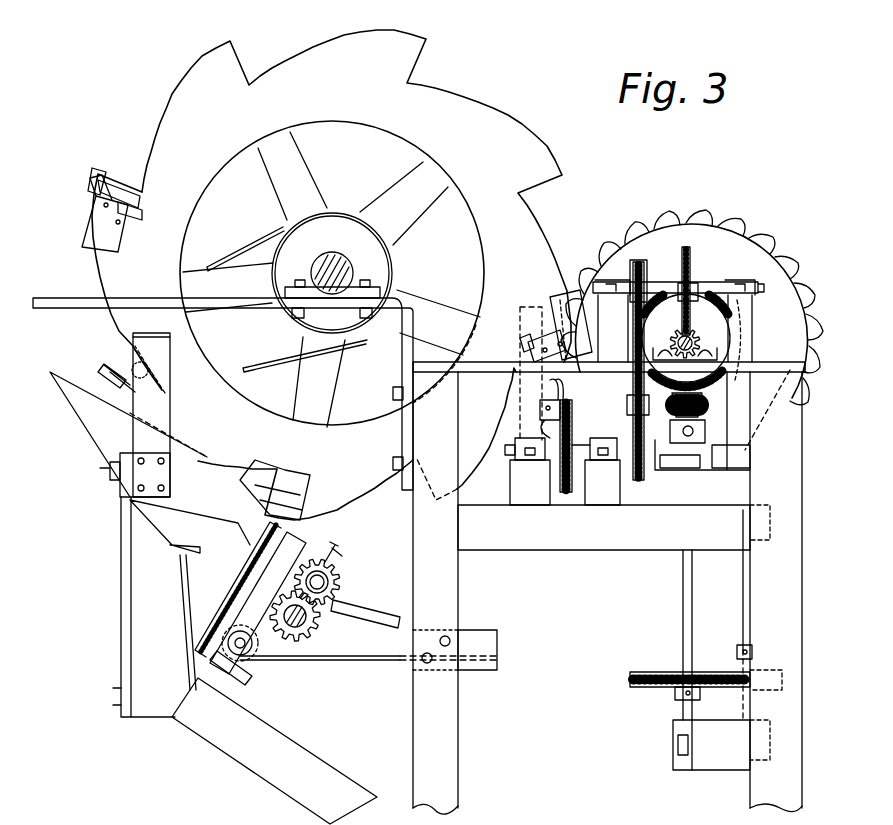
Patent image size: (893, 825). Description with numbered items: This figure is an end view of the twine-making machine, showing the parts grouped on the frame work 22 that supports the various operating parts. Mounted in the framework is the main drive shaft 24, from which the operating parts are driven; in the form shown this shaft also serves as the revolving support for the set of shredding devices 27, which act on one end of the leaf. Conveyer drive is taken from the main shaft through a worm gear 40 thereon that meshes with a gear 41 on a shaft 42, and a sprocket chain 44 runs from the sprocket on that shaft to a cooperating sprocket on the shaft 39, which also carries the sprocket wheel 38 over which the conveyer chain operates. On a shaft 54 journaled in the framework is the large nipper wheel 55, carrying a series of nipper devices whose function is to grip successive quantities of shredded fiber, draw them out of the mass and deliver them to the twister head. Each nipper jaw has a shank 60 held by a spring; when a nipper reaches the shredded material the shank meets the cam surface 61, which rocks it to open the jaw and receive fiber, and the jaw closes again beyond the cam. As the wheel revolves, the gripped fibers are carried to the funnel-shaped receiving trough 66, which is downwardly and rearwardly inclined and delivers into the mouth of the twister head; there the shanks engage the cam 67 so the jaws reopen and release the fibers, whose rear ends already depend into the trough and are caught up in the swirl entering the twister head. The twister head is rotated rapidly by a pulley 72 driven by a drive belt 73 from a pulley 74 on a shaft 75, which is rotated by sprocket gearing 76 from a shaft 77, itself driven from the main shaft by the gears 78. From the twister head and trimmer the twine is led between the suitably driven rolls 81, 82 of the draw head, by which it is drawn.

The frame work 22 is at (515, 540).
The main drive shaft 24 is at (705, 330).
The shredding devices 27 is at (692, 300).
The sprocket wheel 38 is at (578, 490).
The shaft 39 is at (516, 442).
The worm gear 40 is at (675, 338).
The gear 41 is at (702, 250).
The shaft 42 is at (640, 280).
The sprocket chain 44 is at (627, 273).
The shaft 54 is at (356, 276).
The nipper wheel 55 is at (510, 132).
The shank 60 is at (118, 195).
The cam surface 61 is at (522, 336).
The receiving trough 66 is at (105, 440).
The cam 67 is at (165, 405).
The pulley 72 is at (295, 540).
The drive belt 73 is at (362, 655).
The pulley 74 is at (716, 660).
The shaft 75 is at (742, 590).
The sprocket gearing 76 is at (720, 690).
The shaft 77 is at (682, 597).
The gears 78 is at (700, 398).
The roll 81 is at (340, 578).
The roll 82 is at (305, 628).